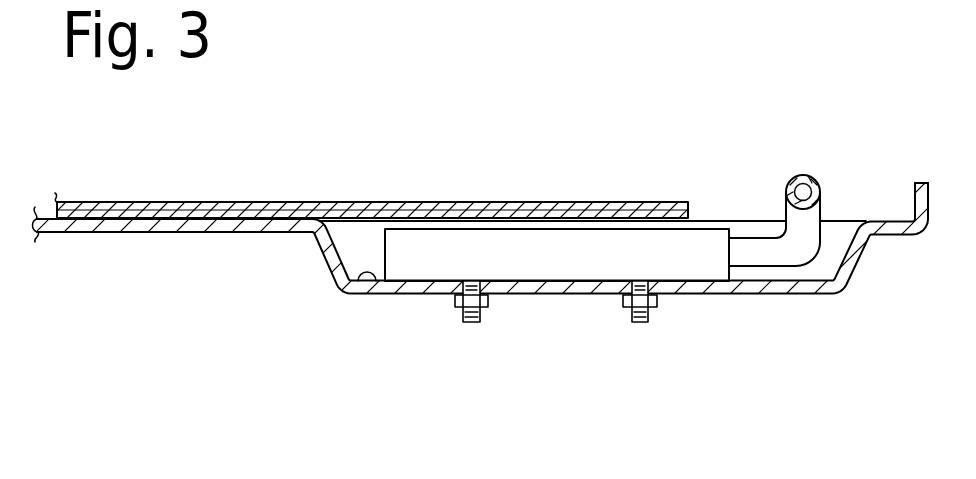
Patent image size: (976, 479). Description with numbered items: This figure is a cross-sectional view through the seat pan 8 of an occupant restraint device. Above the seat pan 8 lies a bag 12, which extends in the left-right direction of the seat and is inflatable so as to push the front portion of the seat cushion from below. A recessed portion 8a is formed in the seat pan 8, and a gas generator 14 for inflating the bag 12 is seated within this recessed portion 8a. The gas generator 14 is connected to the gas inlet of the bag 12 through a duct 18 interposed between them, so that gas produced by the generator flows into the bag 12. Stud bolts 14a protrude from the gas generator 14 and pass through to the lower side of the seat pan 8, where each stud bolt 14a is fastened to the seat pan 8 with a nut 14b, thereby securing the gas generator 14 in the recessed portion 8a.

The seat pan 8 is at (194, 243).
The recessed portion 8a is at (357, 284).
The bag 12 is at (405, 200).
The gas generator 14 is at (546, 258).
The stud bolt 14a is at (473, 322).
The nut 14b is at (455, 301).
The duct 18 is at (815, 180).